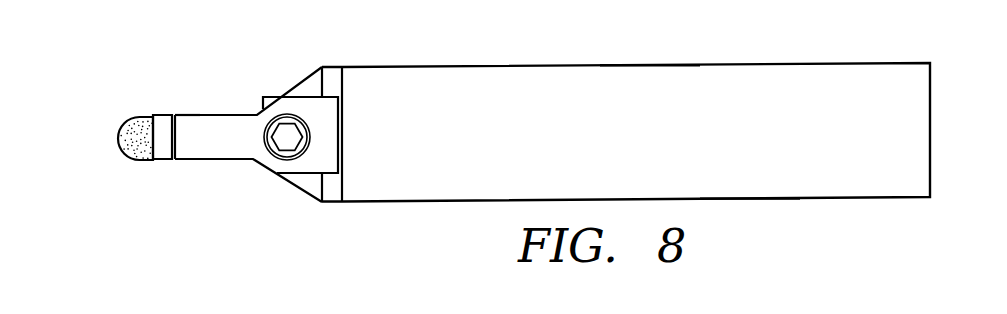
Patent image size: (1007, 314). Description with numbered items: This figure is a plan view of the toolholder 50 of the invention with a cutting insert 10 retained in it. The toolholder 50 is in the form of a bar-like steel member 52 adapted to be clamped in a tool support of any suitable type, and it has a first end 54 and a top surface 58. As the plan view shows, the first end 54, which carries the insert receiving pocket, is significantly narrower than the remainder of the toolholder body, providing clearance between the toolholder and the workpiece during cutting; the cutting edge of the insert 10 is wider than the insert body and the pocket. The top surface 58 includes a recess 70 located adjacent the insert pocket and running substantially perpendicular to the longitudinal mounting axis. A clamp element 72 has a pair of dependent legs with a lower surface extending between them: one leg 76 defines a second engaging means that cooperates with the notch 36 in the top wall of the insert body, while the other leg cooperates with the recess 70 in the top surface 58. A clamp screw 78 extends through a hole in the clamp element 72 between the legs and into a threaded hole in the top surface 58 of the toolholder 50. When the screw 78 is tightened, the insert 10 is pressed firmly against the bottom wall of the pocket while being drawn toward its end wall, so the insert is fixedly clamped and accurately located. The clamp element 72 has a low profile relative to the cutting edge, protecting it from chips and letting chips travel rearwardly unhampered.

The cutting insert 10 is at (136, 112).
The notch 36 is at (174, 130).
The first end 54 is at (215, 112).
The leg 76 is at (183, 145).
The clamp screw 78 is at (279, 153).
The recess 70 is at (335, 77).
The clamp element 72 is at (330, 135).
The top surface 58 is at (650, 93).
The toolholder 50 is at (798, 63).
The bar-like steel member 52 is at (742, 198).